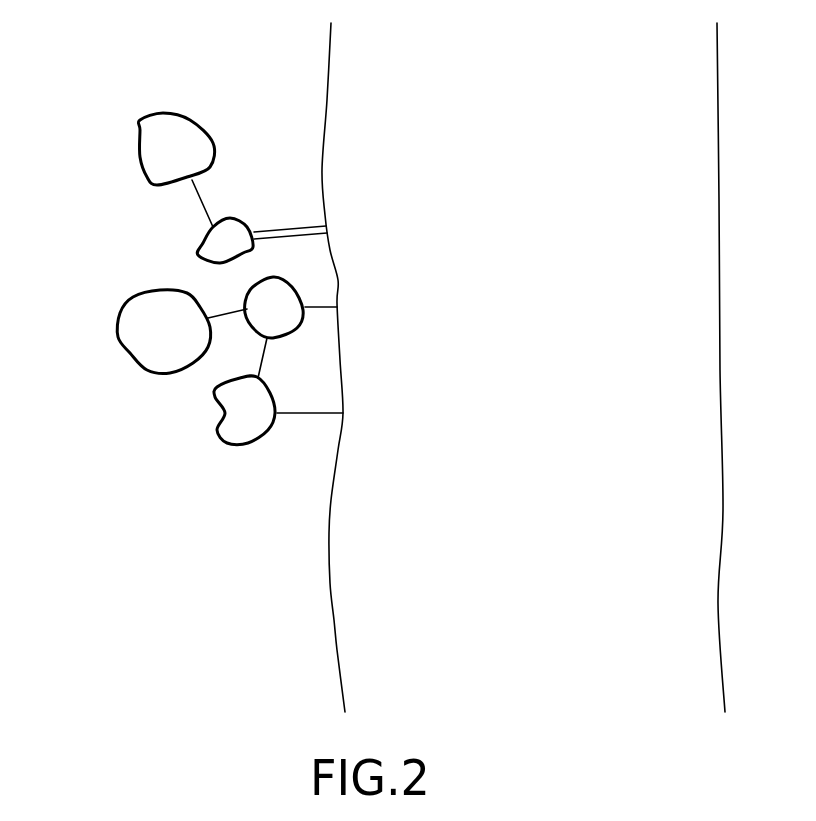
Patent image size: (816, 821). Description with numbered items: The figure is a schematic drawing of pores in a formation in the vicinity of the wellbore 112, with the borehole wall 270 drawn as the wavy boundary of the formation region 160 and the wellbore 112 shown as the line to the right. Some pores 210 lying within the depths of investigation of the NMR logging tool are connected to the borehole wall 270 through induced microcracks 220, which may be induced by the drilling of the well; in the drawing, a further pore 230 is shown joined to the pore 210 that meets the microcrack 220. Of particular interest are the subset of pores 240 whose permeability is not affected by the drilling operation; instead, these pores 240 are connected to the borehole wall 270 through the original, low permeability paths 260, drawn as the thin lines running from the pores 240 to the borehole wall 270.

The wellbore 112 is at (683, 222).
The substrate 160 is at (408, 348).
The pores 210 is at (203, 248).
The induced microcracks 220 is at (305, 222).
The second particle 230 is at (150, 130).
The subset of pores 240 is at (233, 407).
The original low permeability paths 260 is at (317, 415).
The borehole wall 270 is at (335, 627).